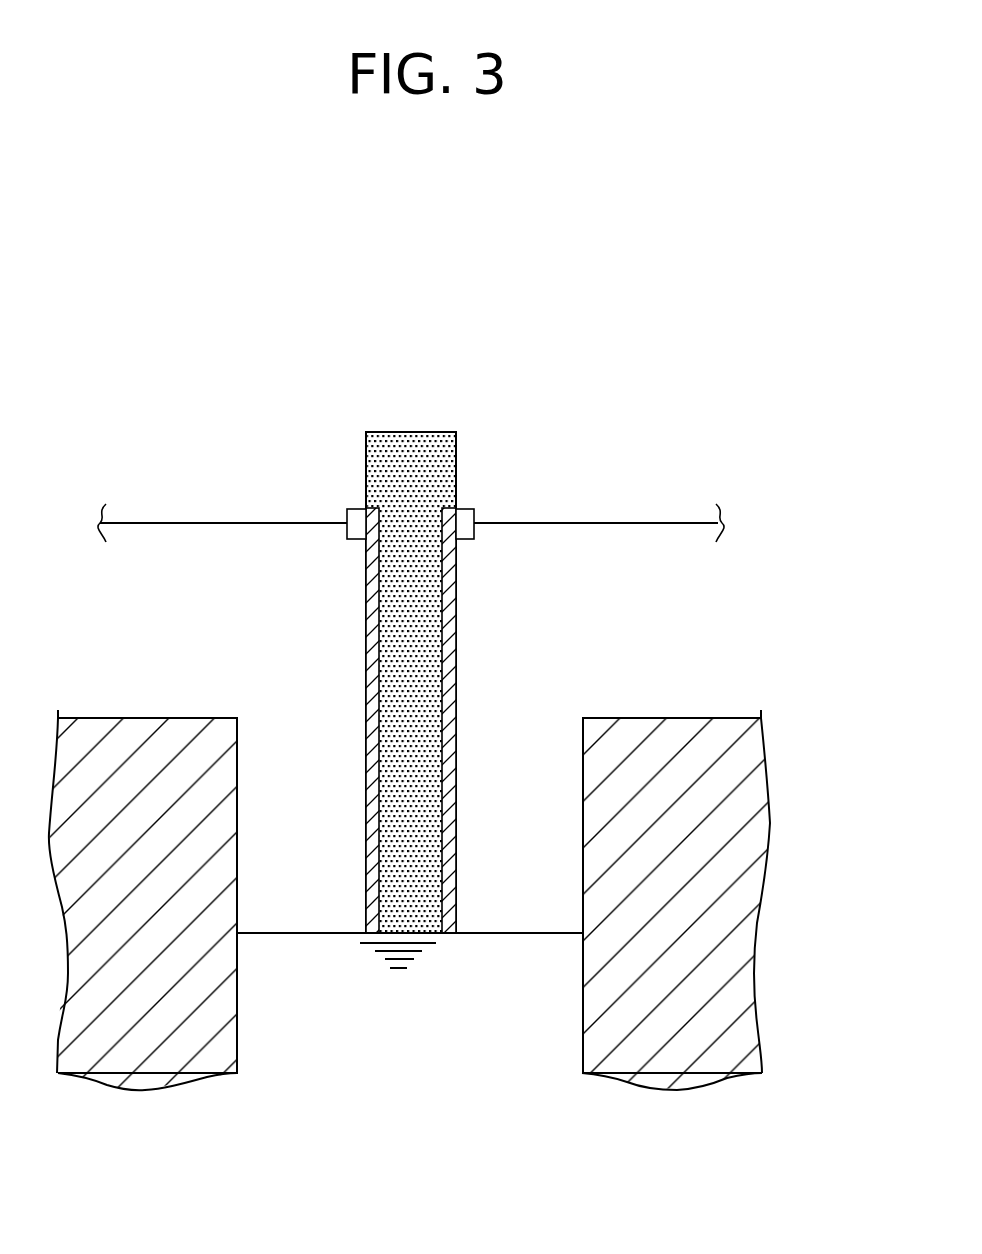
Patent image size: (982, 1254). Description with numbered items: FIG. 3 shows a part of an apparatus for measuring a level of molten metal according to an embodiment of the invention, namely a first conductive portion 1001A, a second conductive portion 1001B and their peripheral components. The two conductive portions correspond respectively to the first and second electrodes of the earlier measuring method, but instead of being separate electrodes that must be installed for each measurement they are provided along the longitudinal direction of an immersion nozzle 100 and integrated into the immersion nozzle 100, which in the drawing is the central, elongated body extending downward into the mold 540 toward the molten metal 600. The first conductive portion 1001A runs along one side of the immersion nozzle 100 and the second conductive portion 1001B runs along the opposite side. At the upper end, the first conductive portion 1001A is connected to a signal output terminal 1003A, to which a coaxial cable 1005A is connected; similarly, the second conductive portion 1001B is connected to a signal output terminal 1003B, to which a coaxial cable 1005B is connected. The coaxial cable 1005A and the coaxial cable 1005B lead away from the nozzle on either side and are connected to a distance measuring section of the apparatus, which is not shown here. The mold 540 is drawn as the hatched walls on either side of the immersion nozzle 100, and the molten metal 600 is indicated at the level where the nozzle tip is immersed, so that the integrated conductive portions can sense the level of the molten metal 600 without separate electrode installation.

The immersion nozzle 100 is at (415, 457).
The first conductive portion 1001A is at (372, 625).
The second conductive portion 1001B is at (455, 620).
The signal output terminal 1003A is at (352, 509).
The signal output terminal 1003B is at (463, 509).
The coaxial cable 1005A is at (209, 523).
The coaxial cable 1005B is at (612, 523).
The mold 540 is at (765, 782).
The molten metal 600 is at (489, 945).